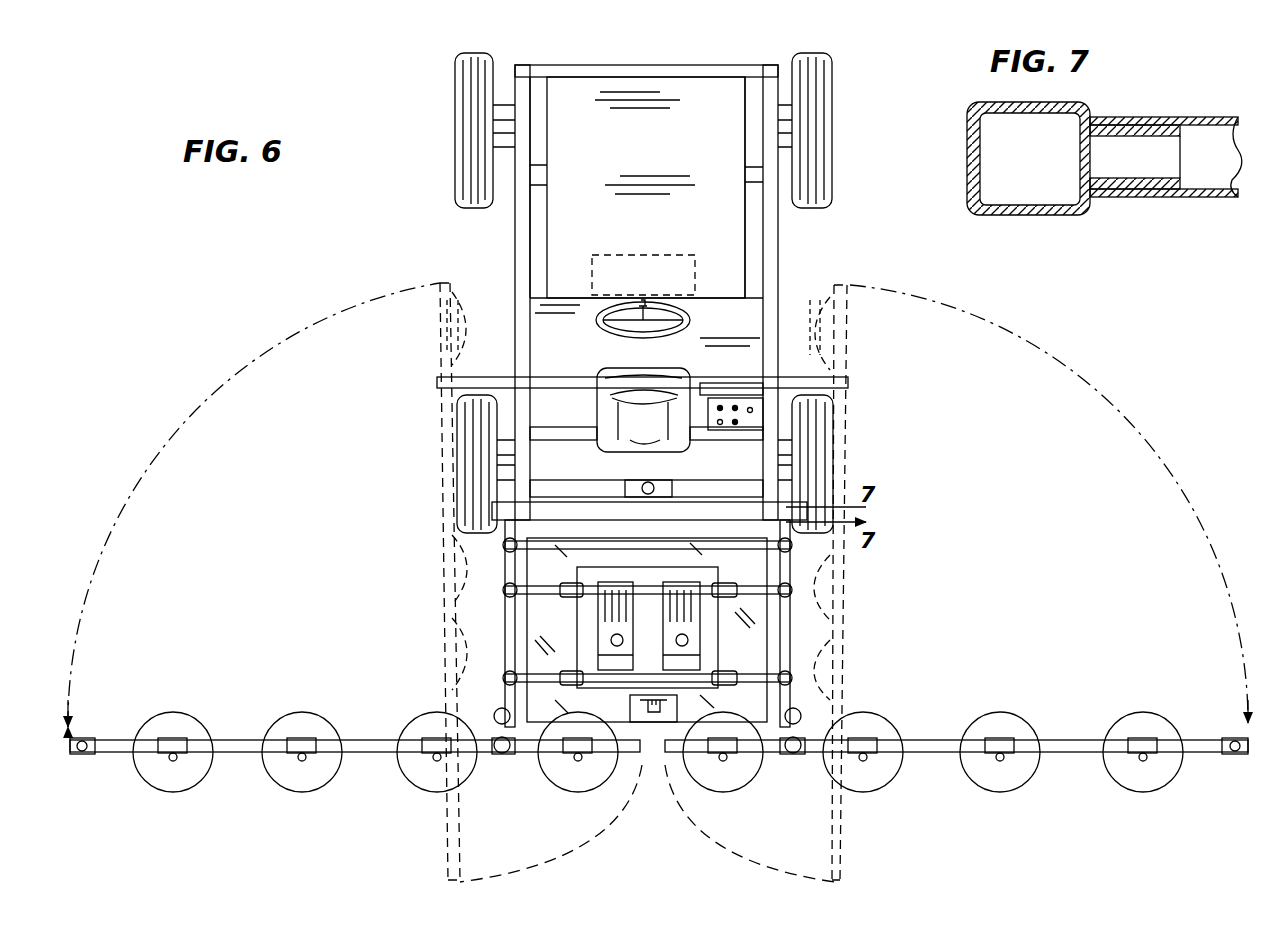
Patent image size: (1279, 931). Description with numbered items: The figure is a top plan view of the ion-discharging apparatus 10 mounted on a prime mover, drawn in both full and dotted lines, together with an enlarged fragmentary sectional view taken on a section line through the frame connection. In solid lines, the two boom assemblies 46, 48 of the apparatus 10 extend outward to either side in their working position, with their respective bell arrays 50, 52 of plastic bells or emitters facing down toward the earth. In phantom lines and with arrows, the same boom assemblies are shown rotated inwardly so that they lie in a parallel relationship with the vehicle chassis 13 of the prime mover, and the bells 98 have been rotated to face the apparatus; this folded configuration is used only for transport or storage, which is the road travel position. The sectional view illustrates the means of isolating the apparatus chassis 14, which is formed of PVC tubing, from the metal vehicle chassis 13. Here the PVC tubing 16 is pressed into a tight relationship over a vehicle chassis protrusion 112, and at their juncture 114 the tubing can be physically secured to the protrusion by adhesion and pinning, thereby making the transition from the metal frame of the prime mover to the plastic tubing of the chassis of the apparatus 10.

In FIG. 6, the apparatus 10 is at (957, 602).
In FIG. 6, the vehicle chassis 13 is at (515, 282).
In FIG. 7, the vehicle chassis 13 is at (1045, 215).
In FIG. 6, the apparatus chassis 14 is at (438, 647).
In FIG. 7, the apparatus chassis 14 is at (1179, 146).
In FIG. 7, the PVC tubing 16 is at (1210, 200).
In FIG. 6, the boom assembly 46 is at (956, 691).
In FIG. 6, the boom assembly 48 is at (355, 679).
In FIG. 6, the bell array 50 is at (968, 797).
In FIG. 6, the bell array 52 is at (308, 802).
In FIG. 6, the bells 98 is at (440, 360).
In FIG. 7, the vehicle chassis protrusion 112 is at (1172, 150).
In FIG. 7, the juncture 114 is at (1147, 185).